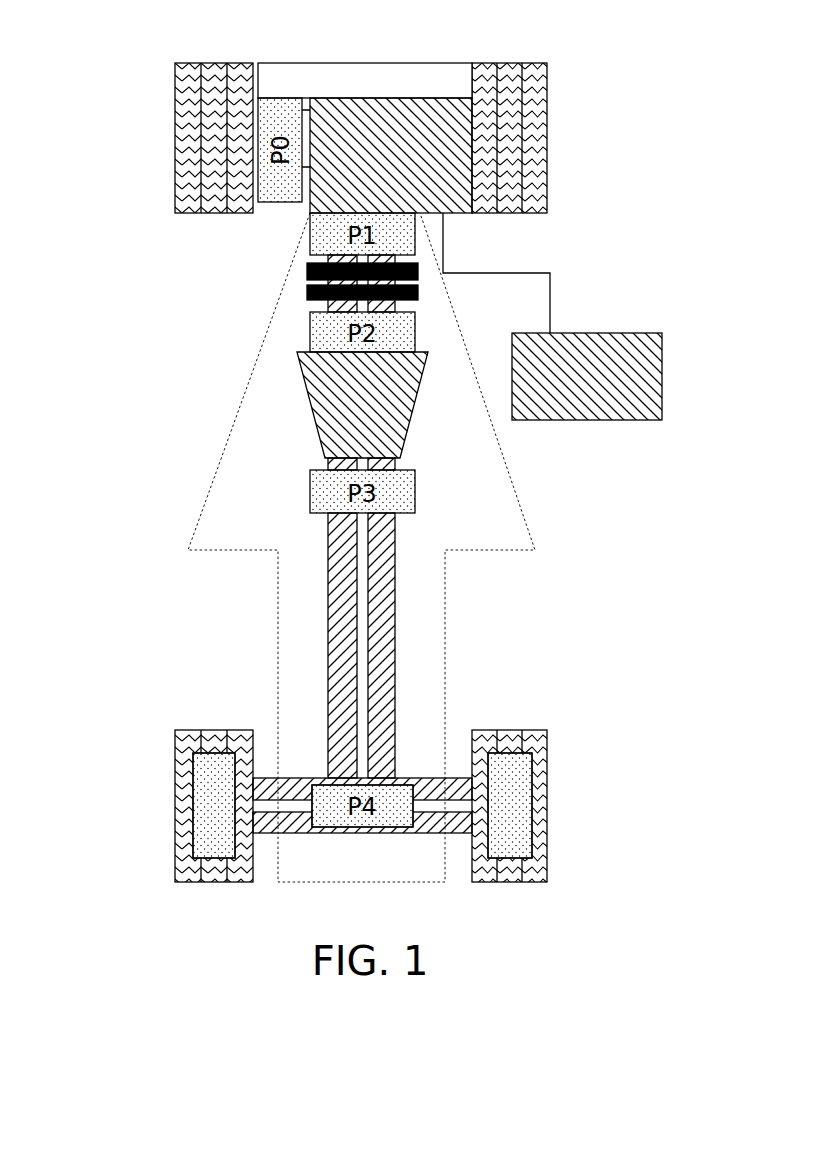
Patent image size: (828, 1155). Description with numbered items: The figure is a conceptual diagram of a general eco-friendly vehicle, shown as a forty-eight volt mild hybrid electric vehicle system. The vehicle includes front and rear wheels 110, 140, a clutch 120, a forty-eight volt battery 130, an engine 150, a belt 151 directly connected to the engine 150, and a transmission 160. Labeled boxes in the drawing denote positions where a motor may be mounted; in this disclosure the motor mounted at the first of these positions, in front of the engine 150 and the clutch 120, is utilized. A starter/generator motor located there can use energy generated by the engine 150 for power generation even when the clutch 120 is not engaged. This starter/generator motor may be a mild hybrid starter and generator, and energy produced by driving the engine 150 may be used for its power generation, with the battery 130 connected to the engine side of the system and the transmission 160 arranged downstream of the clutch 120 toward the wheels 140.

The wheel 110 is at (175, 141).
The clutch 120 is at (307, 290).
The 48V battery 130 is at (606, 333).
The wheel 140 is at (195, 730).
The engine 150 is at (437, 98).
The belt 151 is at (296, 63).
The transmission 160 is at (308, 393).